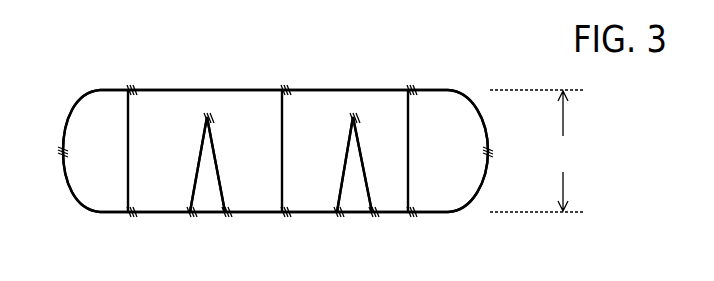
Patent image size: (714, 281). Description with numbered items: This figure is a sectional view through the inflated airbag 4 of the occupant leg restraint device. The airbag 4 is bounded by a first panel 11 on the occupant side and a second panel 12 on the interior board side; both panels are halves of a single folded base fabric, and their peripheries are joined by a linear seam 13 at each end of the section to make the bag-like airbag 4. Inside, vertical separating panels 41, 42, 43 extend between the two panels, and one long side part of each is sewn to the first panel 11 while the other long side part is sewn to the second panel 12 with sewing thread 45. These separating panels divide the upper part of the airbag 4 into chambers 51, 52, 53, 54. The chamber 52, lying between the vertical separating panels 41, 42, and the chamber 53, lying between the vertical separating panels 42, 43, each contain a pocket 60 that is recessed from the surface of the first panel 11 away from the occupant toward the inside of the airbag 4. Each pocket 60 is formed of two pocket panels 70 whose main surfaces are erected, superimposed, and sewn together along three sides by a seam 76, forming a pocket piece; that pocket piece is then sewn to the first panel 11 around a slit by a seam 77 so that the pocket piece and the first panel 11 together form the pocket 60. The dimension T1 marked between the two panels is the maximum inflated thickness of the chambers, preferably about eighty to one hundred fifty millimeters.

The airbag 4 is at (58, 99).
The first panel 11 is at (445, 214).
The second panel 12 is at (236, 89).
The linear seam 13 is at (61, 154).
The vertical separating panel 41 is at (127, 152).
The vertical separating panel 42 is at (283, 129).
The vertical separating panel 43 is at (410, 138).
The sewing thread 45 is at (132, 88).
The chamber 51 is at (108, 106).
The chamber 52 is at (185, 98).
The chamber 53 is at (327, 100).
The chamber 54 is at (450, 106).
The pocket 60 is at (207, 186).
The pocket panel 70 is at (199, 162).
The seam 76 is at (210, 118).
The seam 77 is at (189, 214).
The maximum inflated thickness T1 is at (536, 151).